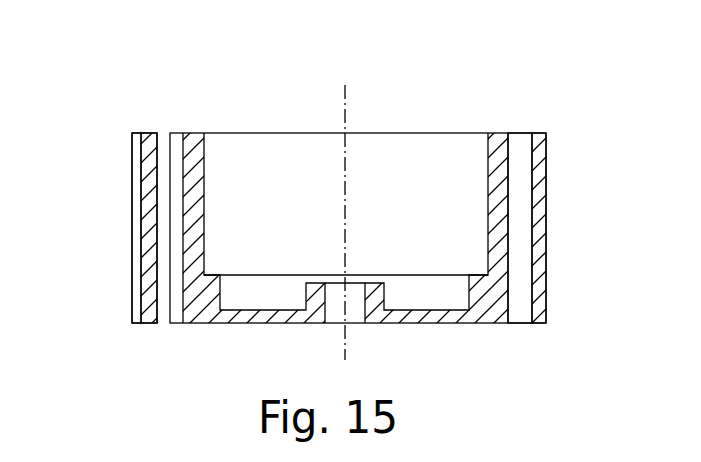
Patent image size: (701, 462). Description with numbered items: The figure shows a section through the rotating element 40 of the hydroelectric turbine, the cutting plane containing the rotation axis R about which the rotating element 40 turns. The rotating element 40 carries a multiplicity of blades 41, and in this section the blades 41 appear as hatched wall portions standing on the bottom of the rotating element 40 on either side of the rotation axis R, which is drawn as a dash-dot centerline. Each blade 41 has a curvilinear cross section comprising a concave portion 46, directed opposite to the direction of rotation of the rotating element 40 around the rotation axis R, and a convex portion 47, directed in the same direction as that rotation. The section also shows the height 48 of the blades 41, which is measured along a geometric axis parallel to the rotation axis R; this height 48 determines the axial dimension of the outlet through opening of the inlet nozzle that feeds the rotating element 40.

The rotating element 40 is at (260, 141).
The blades 41 is at (175, 140).
The concave portion 46 is at (518, 172).
The convex portion 47 is at (138, 296).
The height of the blades 48 is at (540, 215).
The rotation axis R is at (345, 120).